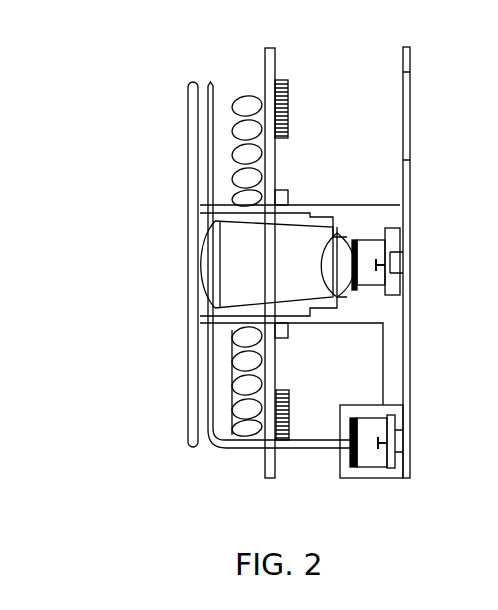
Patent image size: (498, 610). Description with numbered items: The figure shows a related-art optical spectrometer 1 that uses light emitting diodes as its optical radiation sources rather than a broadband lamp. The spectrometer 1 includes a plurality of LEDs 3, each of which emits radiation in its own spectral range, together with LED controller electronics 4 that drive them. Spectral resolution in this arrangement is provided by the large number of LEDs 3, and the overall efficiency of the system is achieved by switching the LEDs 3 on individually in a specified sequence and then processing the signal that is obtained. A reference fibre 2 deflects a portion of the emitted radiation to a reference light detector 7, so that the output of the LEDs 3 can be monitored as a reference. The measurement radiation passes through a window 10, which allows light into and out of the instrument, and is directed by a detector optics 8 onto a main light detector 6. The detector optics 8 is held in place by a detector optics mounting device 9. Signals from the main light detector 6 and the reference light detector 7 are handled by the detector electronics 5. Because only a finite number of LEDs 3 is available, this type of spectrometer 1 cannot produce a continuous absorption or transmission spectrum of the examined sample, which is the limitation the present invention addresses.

The spectrometer 1 is at (118, 158).
The reference fibre 2 is at (203, 145).
The LEDs 3 is at (240, 106).
The LED controller electronics 4 is at (268, 155).
The detector electronics 5 is at (407, 170).
The main light detector 6 is at (385, 265).
The reference light detector 7 is at (387, 448).
The detector optics 8 is at (215, 268).
The detector optics mounting device 9 is at (270, 311).
The window 10 is at (190, 408).